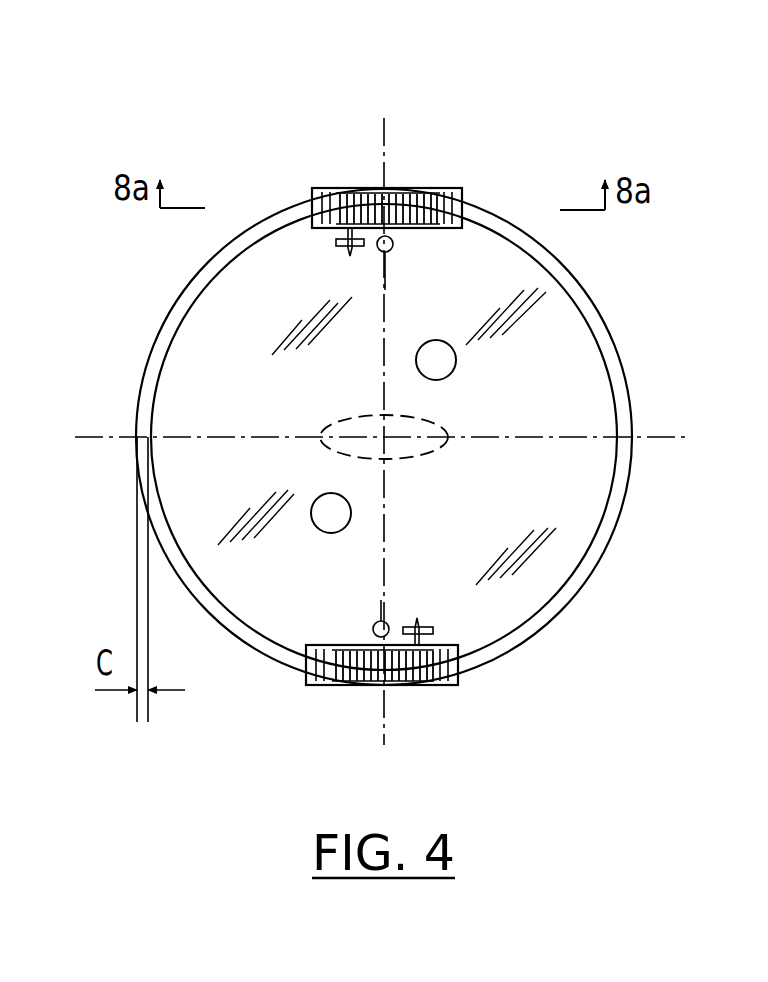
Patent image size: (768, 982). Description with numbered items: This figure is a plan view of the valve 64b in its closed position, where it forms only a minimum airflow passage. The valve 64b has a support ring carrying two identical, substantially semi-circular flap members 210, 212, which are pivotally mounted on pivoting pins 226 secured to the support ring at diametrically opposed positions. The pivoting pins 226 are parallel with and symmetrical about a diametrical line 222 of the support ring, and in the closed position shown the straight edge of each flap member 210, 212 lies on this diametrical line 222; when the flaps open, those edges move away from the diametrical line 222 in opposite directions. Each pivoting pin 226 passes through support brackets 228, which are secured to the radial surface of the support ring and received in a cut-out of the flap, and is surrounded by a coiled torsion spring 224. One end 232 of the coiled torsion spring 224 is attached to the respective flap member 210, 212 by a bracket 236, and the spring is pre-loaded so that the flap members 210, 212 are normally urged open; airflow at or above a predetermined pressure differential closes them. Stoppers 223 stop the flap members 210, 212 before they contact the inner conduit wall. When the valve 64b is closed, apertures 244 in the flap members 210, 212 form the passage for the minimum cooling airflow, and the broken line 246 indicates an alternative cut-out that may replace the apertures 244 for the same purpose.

The valve 64b is at (429, 139).
The flap member 210 is at (562, 322).
The flap member 212 is at (558, 552).
The diametrical line 222 is at (182, 437).
The stopper 223 is at (393, 245).
The coiled torsion spring 224 is at (413, 190).
The pivoting pin 226 is at (462, 210).
The support bracket 228 is at (313, 194).
The end of the coiled torsion spring 232 is at (388, 292).
The bracket 236 is at (338, 242).
The aperture 244 is at (452, 372).
The cut-out (broken line) 246 is at (425, 453).